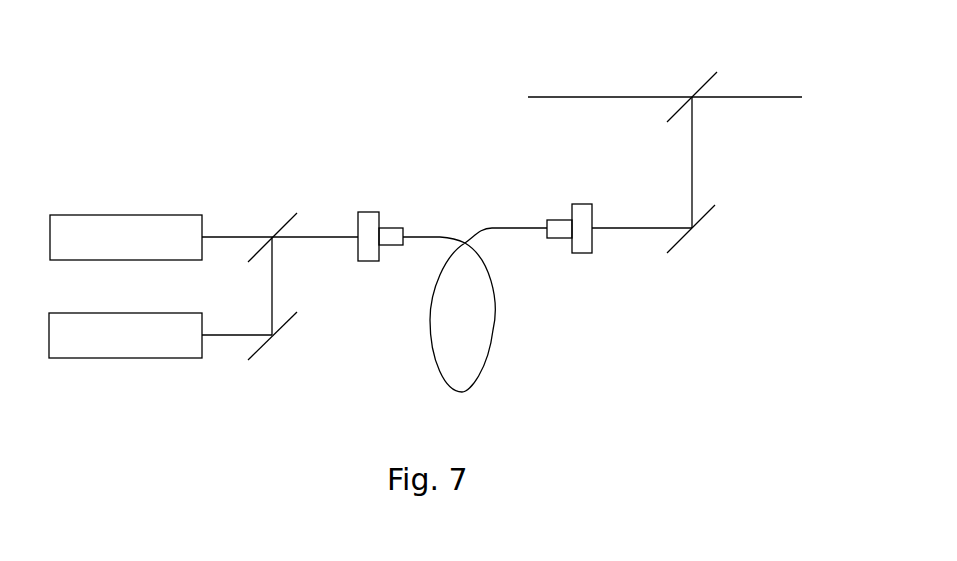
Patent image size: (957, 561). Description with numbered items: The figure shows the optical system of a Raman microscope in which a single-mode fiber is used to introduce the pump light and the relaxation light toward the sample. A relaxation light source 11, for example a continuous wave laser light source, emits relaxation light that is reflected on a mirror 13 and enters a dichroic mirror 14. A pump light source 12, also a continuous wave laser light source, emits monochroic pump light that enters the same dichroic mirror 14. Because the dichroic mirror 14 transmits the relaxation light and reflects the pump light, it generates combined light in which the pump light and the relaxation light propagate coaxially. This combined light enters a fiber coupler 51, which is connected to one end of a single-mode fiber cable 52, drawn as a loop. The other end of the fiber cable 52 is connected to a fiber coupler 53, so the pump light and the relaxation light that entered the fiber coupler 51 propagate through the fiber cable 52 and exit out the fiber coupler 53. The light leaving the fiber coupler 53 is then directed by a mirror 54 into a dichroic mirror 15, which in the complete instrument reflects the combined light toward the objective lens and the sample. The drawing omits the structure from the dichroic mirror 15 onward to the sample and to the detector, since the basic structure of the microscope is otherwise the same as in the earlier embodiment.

The relaxation light source 11 is at (127, 358).
The pump light source 12 is at (127, 215).
The mirror 13 is at (258, 362).
The dichroic mirror 14 is at (284, 214).
The dichroic mirror 15 is at (697, 74).
The fiber coupler 51 is at (370, 212).
The fiber cable 52 is at (494, 330).
The fiber coupler 53 is at (582, 204).
The mirror 54 is at (707, 220).